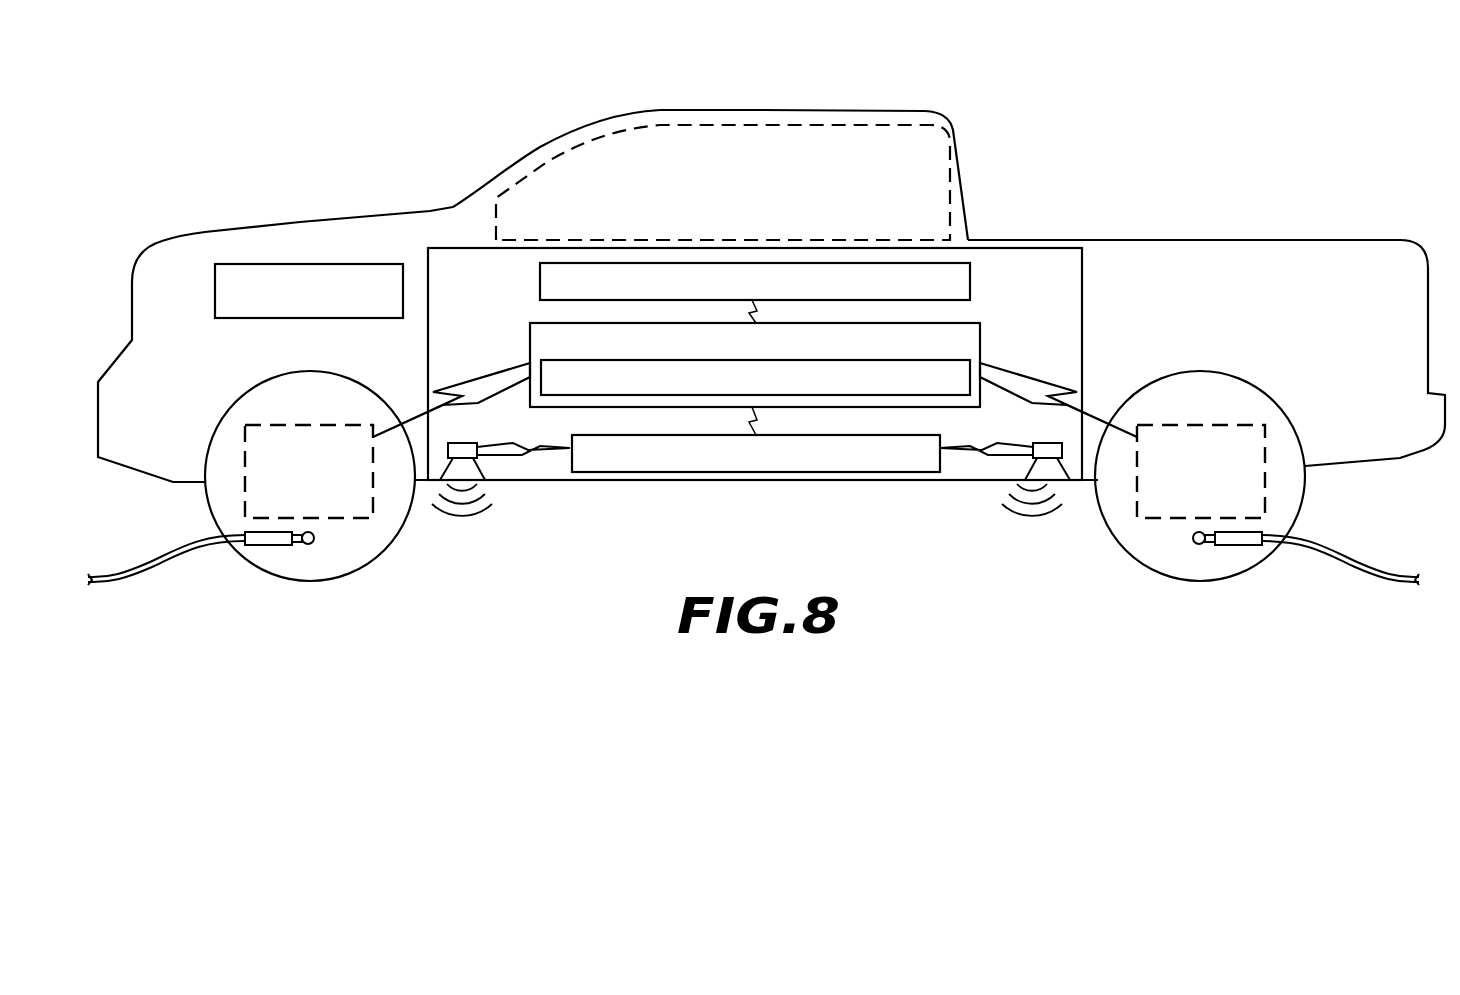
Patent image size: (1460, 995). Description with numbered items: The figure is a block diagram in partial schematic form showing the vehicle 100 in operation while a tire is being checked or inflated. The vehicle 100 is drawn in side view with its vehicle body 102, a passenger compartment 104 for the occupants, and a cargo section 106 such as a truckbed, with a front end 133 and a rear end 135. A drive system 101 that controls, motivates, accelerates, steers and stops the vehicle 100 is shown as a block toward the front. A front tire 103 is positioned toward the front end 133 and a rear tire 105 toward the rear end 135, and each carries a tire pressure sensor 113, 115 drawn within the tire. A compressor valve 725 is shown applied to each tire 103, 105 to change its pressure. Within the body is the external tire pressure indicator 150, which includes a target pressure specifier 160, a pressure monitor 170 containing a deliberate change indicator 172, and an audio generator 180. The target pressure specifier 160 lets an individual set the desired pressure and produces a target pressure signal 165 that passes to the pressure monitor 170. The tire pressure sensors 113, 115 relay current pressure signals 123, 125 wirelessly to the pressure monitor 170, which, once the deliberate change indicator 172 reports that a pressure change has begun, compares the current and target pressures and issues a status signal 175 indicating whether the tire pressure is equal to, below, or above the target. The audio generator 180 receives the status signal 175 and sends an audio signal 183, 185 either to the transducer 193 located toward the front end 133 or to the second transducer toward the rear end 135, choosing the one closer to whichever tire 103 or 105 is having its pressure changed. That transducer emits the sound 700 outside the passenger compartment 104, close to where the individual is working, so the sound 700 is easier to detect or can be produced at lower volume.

The vehicle 100 is at (769, 269).
The drive system 101 is at (270, 318).
The vehicle body 102 is at (298, 222).
The front tire 103 is at (396, 533).
The passenger compartment 104 is at (712, 131).
The rear tire 105 is at (1114, 533).
The cargo section 106 is at (1190, 259).
The tire pressure sensor 113 is at (337, 520).
The tire pressure sensor 115 is at (1173, 520).
The current pressure signal 123 is at (436, 392).
The current pressure signal 125 is at (1074, 392).
The front end 133 is at (167, 198).
The rear end 135 is at (1365, 206).
The external tire pressure indicator 150 is at (736, 323).
The target pressure specifier 160 is at (960, 294).
The target pressure signal 165 is at (762, 308).
The pressure monitor 170 is at (935, 354).
The deliberate change indicator 172 is at (960, 392).
The status signal 175 is at (762, 420).
The audio generator 180 is at (925, 466).
The audio signal 183 is at (523, 455).
The audio signal 185 is at (987, 455).
The transducer 193 is at (478, 465).
The sound 700 is at (485, 523).
The compressor valve 725 is at (262, 545).